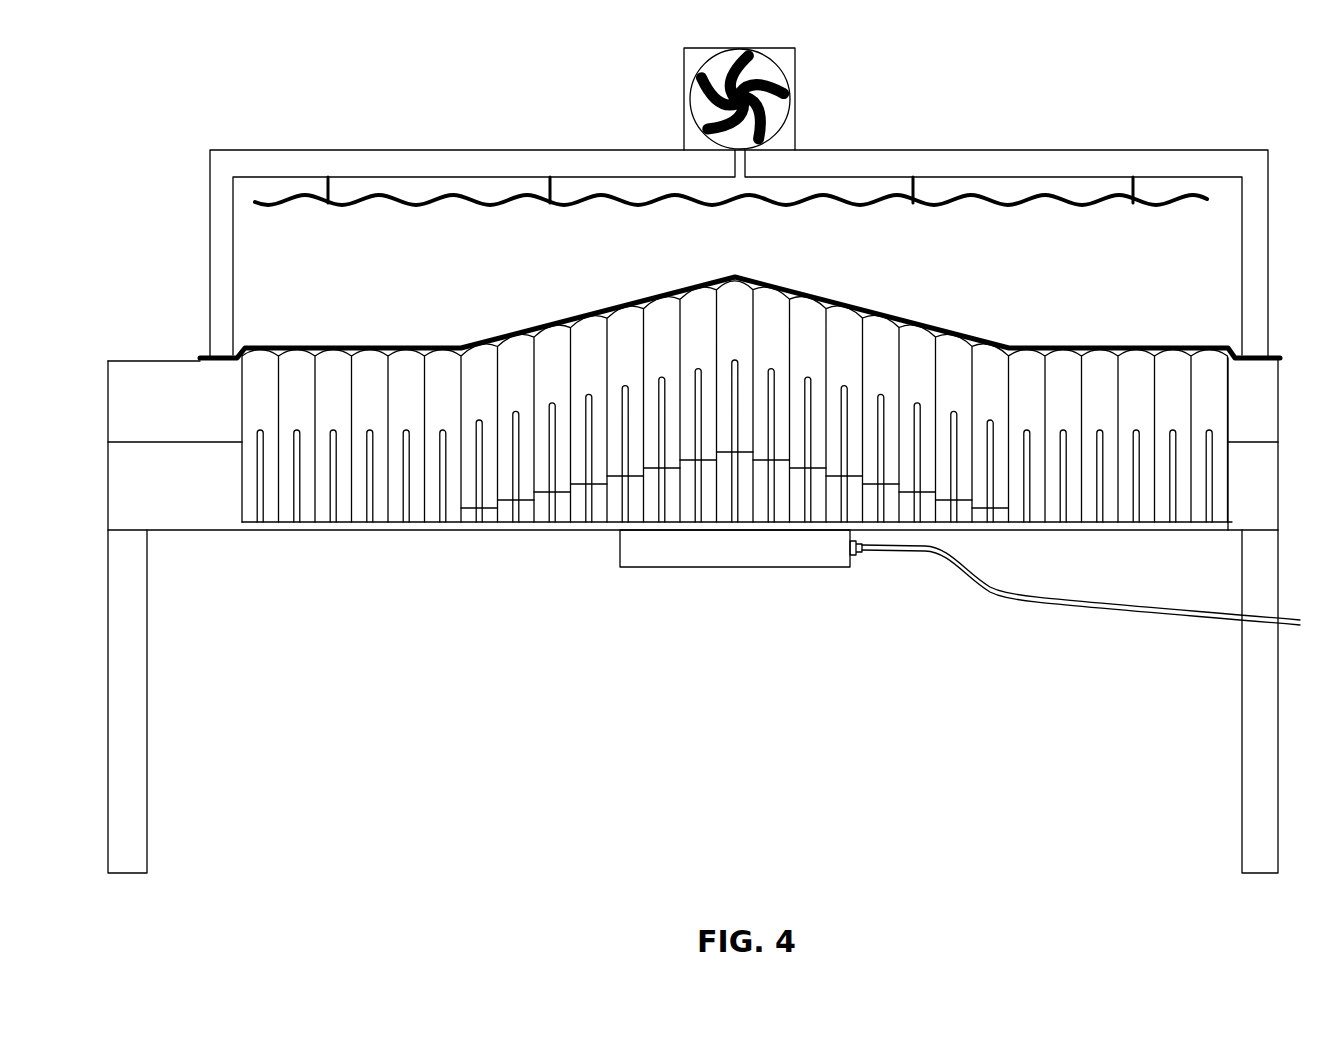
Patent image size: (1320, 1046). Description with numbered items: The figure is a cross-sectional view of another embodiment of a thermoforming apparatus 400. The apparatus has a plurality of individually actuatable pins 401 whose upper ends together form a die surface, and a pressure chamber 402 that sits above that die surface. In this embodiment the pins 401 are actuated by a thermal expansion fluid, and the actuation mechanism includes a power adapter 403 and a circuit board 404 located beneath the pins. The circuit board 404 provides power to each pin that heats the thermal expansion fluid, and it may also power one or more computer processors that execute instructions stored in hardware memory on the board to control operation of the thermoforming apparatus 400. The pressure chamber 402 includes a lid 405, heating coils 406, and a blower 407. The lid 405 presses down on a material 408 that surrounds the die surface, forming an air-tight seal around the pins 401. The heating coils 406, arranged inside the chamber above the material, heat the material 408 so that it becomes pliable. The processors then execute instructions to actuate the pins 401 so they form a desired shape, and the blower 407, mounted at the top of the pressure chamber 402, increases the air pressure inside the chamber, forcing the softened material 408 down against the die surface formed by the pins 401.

The thermoforming apparatus 400 is at (412, 900).
The individually actuatable pins 401 is at (371, 372).
The pressure chamber 402 is at (170, 97).
The power adapter 403 is at (750, 564).
The circuit board 404 is at (240, 522).
The lid 405 is at (210, 232).
The heating coils 406 is at (279, 207).
The blower 407 is at (684, 90).
The material 408 is at (1078, 346).